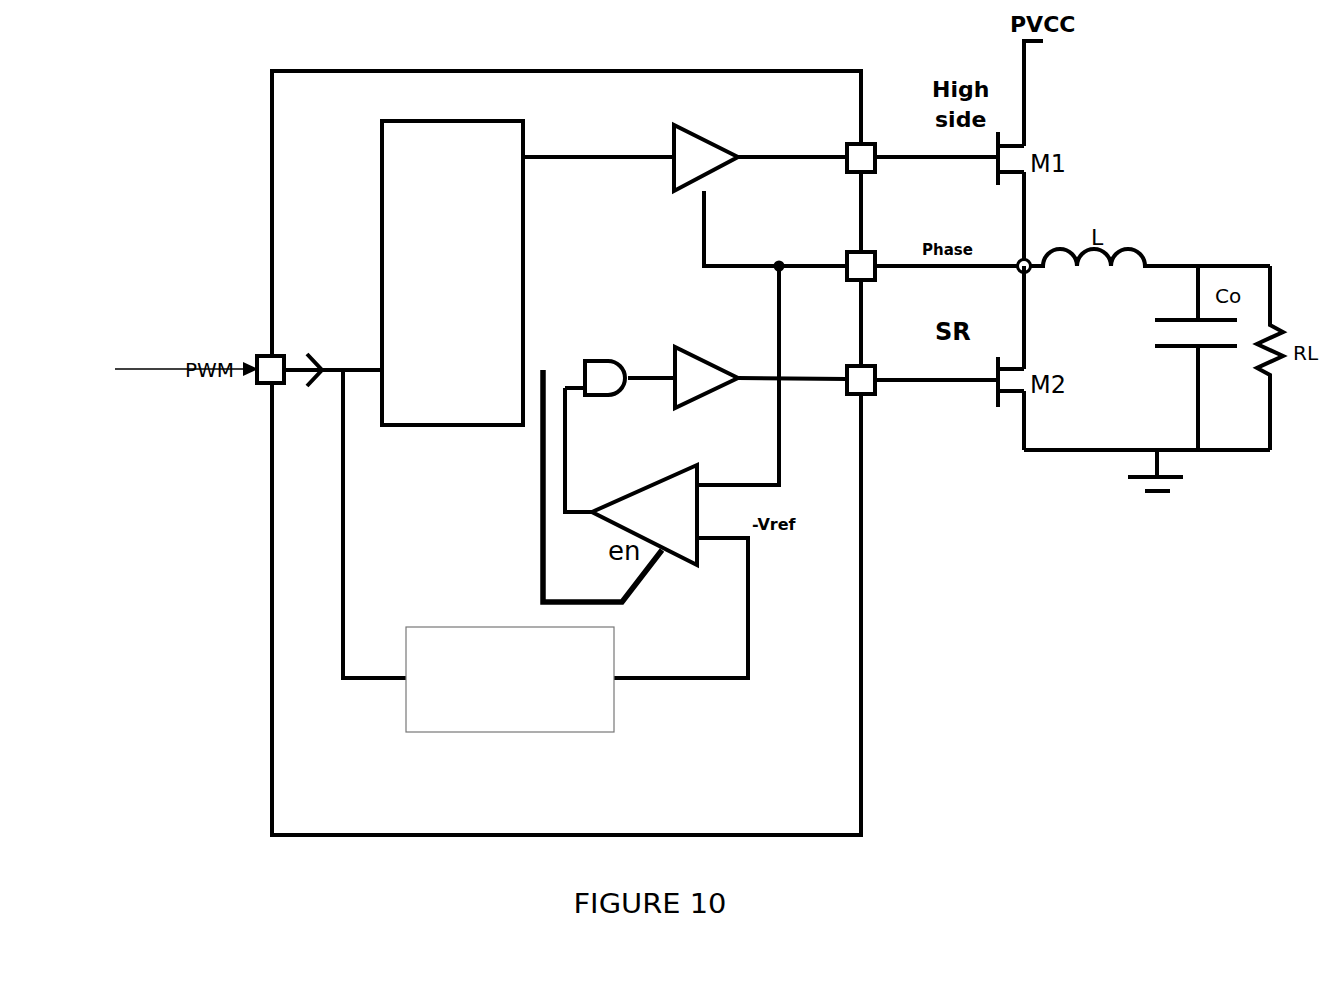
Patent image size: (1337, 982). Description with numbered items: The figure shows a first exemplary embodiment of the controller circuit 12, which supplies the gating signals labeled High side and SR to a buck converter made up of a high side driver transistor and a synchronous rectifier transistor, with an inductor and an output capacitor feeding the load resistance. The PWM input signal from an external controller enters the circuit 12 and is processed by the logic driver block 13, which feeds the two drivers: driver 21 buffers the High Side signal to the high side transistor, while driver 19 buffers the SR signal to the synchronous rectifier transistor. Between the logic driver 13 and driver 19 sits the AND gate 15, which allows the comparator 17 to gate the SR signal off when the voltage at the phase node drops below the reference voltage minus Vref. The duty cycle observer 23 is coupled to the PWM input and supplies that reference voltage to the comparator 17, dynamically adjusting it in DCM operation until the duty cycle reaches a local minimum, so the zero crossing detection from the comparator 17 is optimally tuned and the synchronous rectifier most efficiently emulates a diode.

The circuit 12 is at (566, 453).
The logic driver 13 is at (452, 273).
The AND gate 15 is at (605, 330).
The comparator 17 is at (712, 458).
The driver 19 is at (712, 330).
The driver 21 is at (700, 94).
The duty cycle observer 23 is at (489, 640).